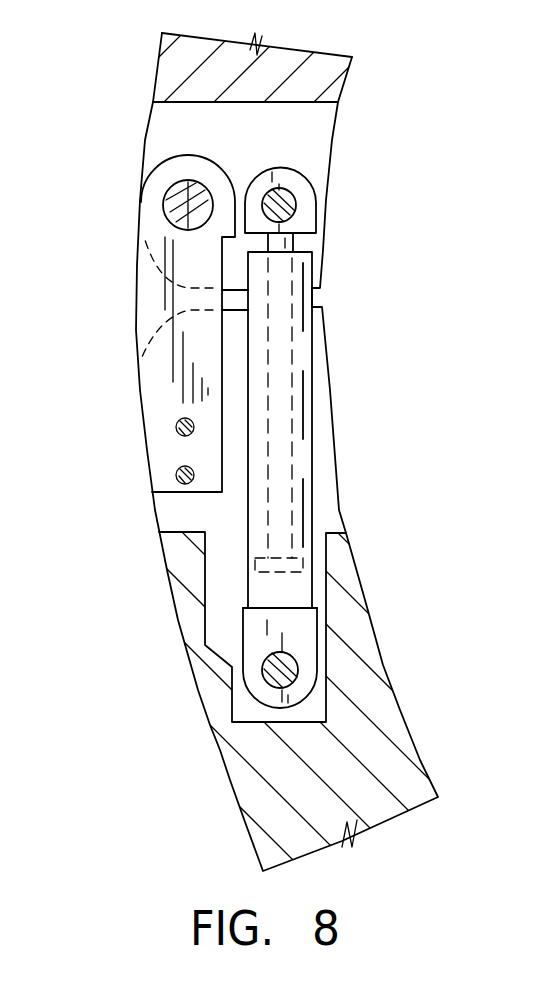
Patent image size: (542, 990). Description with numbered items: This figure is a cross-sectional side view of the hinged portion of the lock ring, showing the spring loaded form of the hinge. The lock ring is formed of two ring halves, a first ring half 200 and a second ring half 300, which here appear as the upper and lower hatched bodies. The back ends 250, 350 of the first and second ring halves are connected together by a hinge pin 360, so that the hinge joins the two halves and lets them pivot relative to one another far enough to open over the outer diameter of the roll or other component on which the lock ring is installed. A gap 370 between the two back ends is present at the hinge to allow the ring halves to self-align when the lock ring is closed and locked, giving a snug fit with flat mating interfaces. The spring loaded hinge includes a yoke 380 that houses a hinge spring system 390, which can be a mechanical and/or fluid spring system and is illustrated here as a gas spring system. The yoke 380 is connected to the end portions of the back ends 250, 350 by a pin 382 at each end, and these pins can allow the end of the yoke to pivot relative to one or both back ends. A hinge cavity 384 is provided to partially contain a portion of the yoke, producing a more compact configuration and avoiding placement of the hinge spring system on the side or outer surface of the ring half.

The first ring half 200 is at (168, 77).
The back end of the first ring half 250 is at (323, 255).
The second ring half 300 is at (252, 787).
The back end of the second ring half 350 is at (318, 347).
The hinge pin 360 is at (167, 193).
The gap 370 is at (317, 297).
The yoke 380 is at (307, 398).
The pin 382 is at (300, 202).
The hinge cavity 384 is at (322, 558).
The hinge spring system 390 is at (287, 462).